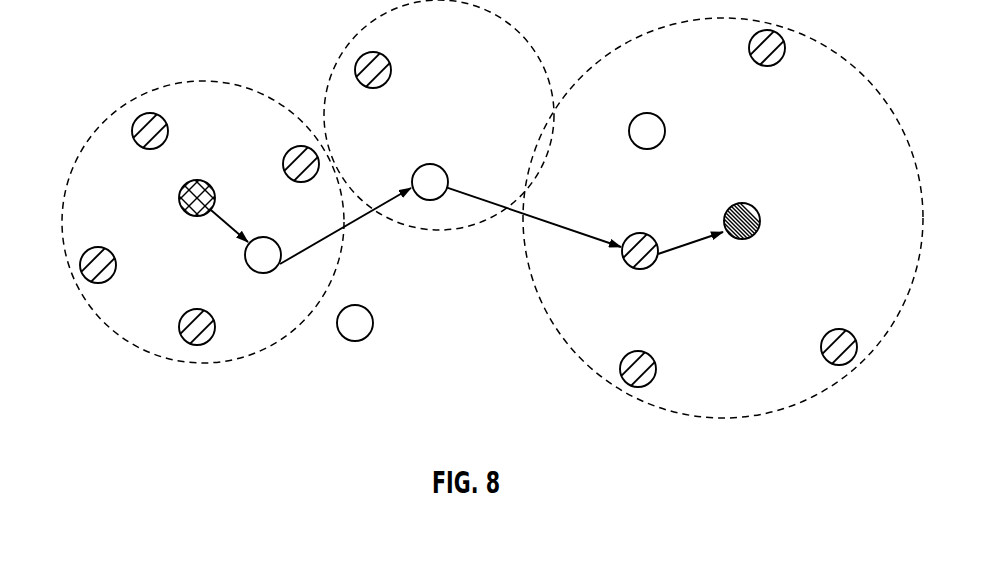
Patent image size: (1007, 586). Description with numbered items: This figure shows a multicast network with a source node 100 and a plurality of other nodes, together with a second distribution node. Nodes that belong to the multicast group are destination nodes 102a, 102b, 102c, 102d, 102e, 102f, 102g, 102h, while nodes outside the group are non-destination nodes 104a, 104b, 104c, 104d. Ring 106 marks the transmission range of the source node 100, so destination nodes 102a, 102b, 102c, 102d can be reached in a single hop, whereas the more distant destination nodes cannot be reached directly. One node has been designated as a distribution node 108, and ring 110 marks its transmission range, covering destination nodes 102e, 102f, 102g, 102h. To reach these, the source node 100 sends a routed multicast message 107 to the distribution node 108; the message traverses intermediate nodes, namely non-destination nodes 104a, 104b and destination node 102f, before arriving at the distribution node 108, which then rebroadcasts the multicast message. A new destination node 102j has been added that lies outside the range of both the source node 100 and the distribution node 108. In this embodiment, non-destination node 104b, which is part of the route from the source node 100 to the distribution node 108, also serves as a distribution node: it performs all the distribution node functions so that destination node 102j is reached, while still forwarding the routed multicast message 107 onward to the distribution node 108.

The source node 100 is at (180, 200).
The destination node 102a is at (102, 282).
The destination node 102b is at (244, 316).
The destination node 102c is at (284, 161).
The destination node 102d is at (201, 122).
The destination node 102e is at (781, 59).
The destination node 102f is at (651, 237).
The destination node 102g is at (688, 358).
The destination node 102h is at (842, 330).
The new destination node 102j is at (391, 70).
The non-destination node 104a is at (306, 235).
The non-destination node 104b is at (476, 167).
The non-destination node 104c is at (401, 326).
The non-destination node 104d is at (695, 122).
The ring 106 is at (108, 124).
The routed multicast message 107 is at (550, 224).
The distribution node 108 is at (760, 220).
The ring 110 is at (608, 56).